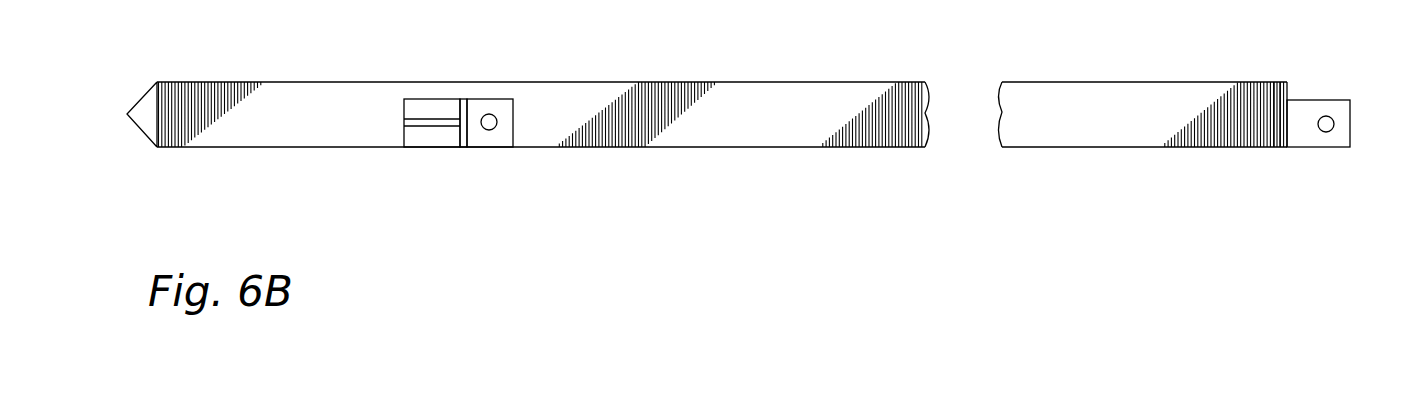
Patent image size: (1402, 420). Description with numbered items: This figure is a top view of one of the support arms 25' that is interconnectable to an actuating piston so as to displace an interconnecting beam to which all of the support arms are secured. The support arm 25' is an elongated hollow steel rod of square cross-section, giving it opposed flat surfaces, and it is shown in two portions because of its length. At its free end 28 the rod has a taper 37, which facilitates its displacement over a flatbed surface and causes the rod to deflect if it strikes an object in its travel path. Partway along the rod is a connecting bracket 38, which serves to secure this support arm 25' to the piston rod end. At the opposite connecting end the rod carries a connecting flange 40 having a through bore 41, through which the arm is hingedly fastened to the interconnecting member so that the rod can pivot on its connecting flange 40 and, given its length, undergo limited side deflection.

The support arm 25' is at (722, 163).
The free end 28 is at (272, 123).
The taper 37 is at (147, 101).
The connecting bracket 38 is at (432, 126).
The connecting flange 40 is at (1319, 100).
The through bore 41 is at (1326, 132).